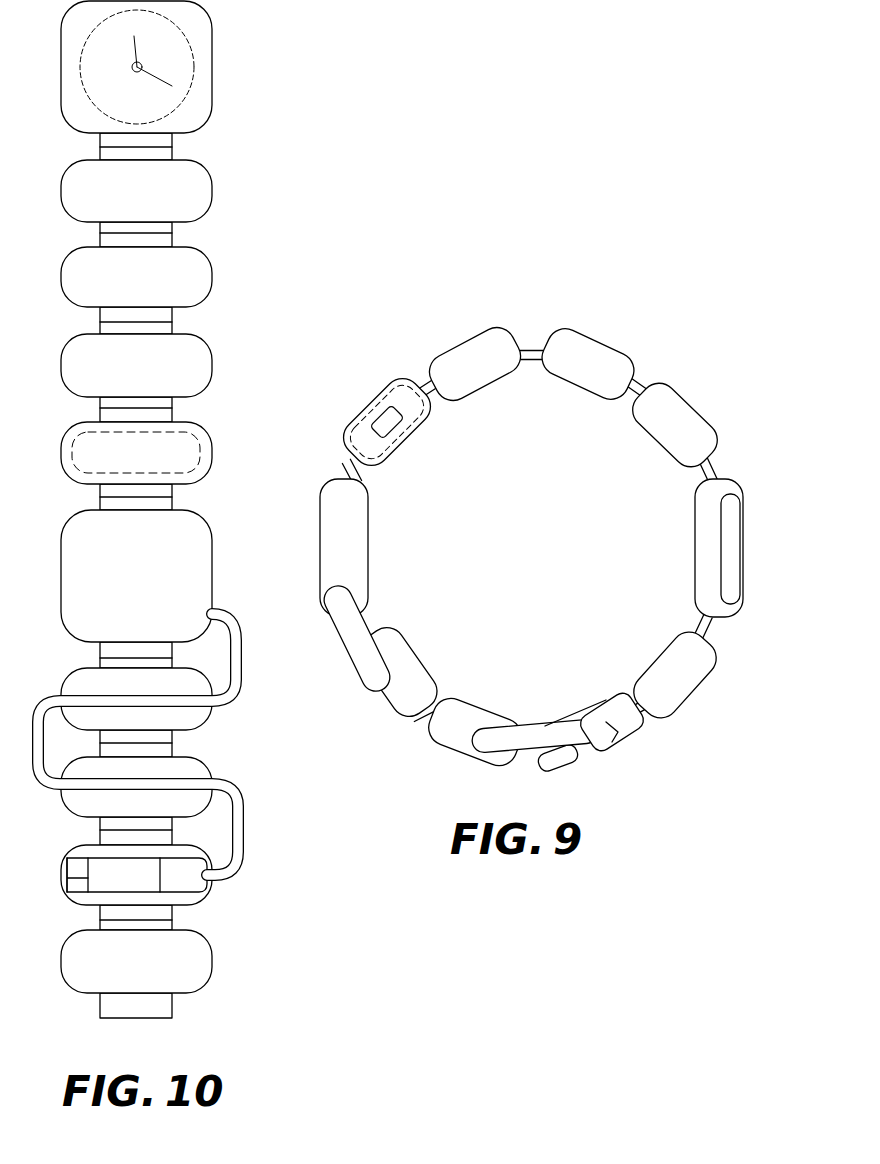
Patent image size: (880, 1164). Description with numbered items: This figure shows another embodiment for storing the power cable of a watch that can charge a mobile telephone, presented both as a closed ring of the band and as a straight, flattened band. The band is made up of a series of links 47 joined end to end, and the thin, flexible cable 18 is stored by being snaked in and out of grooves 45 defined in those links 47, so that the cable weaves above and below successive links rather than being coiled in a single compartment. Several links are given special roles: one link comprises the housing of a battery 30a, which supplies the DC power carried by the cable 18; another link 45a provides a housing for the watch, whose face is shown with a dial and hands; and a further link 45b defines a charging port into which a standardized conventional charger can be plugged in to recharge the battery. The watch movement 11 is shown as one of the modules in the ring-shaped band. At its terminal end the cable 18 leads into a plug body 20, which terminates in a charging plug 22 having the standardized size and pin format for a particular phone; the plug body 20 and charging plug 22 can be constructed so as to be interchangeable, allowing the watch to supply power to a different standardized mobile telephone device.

In FIG. 9, the watch movement 11 is at (731, 522).
In FIG. 10, the cable 18 is at (227, 690).
In FIG. 10, the plug body 20 is at (132, 887).
In FIG. 10, the charging plug 22 is at (66, 876).
In FIG. 10, the battery housing link 30a is at (95, 582).
In FIG. 9, the battery housing link 30a is at (345, 539).
In FIG. 10, the grooves 45 is at (82, 794).
In FIG. 10, the watch housing link 45a is at (193, 103).
In FIG. 10, the charging port link 45b is at (204, 469).
In FIG. 9, the charging port link 45b is at (368, 420).
In FIG. 10, the links 47 is at (110, 749).